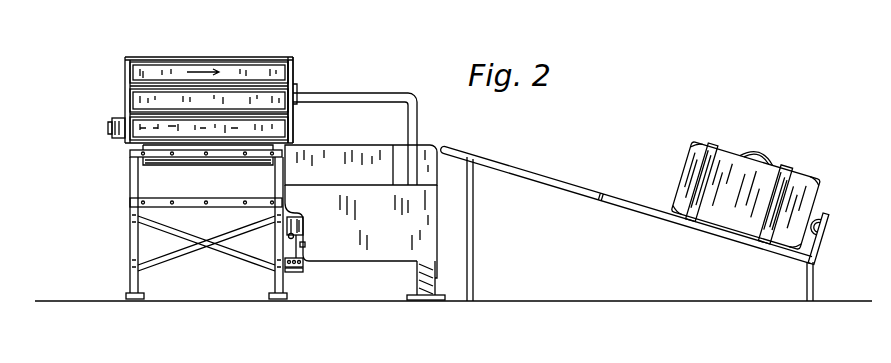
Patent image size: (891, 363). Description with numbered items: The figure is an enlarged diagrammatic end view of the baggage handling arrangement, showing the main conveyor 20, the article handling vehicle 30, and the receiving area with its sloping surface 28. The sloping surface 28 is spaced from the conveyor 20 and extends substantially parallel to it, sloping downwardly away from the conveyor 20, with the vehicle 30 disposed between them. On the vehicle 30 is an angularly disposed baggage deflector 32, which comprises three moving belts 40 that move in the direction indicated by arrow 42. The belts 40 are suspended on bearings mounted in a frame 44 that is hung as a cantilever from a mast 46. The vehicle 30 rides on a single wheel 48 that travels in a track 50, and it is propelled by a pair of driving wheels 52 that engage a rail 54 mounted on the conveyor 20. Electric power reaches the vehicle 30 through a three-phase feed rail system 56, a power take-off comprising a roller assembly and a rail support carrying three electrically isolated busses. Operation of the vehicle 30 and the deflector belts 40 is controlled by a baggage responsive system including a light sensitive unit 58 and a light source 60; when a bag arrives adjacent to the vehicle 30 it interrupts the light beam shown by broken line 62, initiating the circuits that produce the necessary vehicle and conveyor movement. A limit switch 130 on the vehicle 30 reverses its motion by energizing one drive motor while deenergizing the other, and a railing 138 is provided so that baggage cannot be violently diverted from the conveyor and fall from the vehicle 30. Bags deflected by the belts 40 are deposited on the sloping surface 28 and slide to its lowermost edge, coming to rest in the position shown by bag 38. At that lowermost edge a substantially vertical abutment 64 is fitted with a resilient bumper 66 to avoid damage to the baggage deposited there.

The conveyor 20 is at (148, 183).
The sloping surface 28 is at (600, 200).
The article handling vehicle 30 is at (361, 231).
The baggage deflector 32 is at (193, 54).
The bag 38 is at (760, 182).
The moving belts 40 is at (132, 114).
The arrow 42 is at (207, 67).
The frame 44 is at (278, 57).
The mast 46 is at (293, 87).
The single wheel 48 is at (418, 278).
The track 50 is at (427, 300).
The driving wheels 52 is at (293, 215).
The rail 54 is at (277, 233).
The three-phase feed rail system 56 is at (302, 270).
The light sensitive unit 58 is at (113, 132).
The light source 60 is at (403, 167).
The light beam 62 is at (303, 143).
The vertical abutment 64 is at (823, 240).
The resilient bumper 66 is at (820, 213).
The limit switch 130 is at (305, 244).
The railing 138 is at (372, 95).